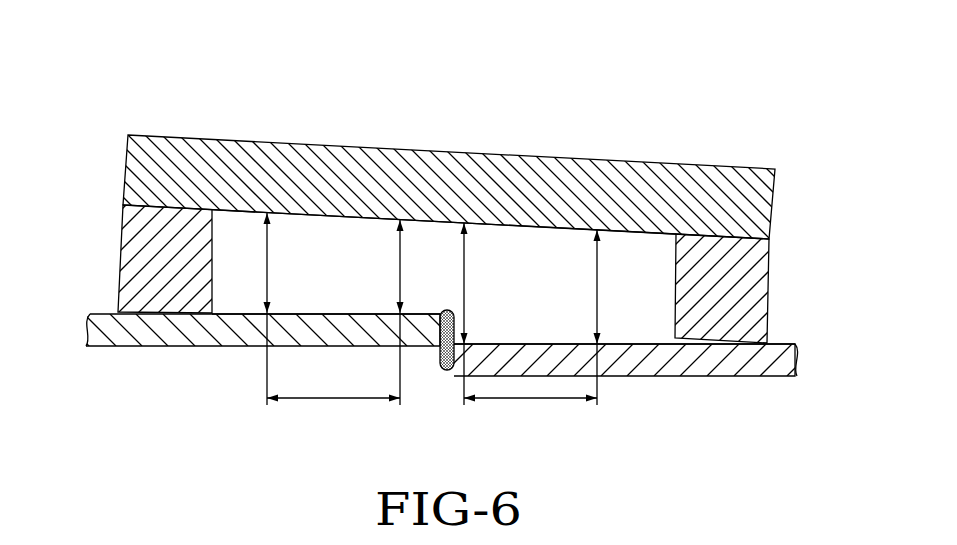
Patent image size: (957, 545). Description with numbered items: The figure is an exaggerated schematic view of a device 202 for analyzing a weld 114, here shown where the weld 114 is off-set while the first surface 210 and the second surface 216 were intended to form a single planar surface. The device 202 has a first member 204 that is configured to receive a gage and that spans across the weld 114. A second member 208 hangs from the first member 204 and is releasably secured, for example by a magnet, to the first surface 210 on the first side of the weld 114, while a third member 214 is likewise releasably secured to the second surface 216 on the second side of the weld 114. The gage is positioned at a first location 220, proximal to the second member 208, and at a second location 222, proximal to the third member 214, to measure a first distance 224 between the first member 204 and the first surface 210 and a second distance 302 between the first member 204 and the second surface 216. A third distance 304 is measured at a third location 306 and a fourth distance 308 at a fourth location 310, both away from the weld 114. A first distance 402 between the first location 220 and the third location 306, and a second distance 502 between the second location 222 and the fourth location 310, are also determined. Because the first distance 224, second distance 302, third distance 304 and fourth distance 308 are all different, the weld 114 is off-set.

The device 202 is at (660, 114).
The first member 204 is at (250, 167).
The second member 208 is at (148, 250).
The third member 214 is at (735, 288).
The third location 306 is at (265, 315).
The first surface 210 is at (507, 343).
The weld 114 is at (442, 352).
The second surface 216 is at (370, 313).
The first distance 224 is at (398, 267).
The second distance 302 is at (463, 257).
The third distance 304 is at (267, 258).
The first location 220 is at (402, 313).
The second location 222 is at (465, 341).
The fourth distance 308 is at (598, 273).
The fourth location 310 is at (598, 346).
The first distance between locations 402 is at (338, 398).
The second distance between locations 502 is at (527, 398).